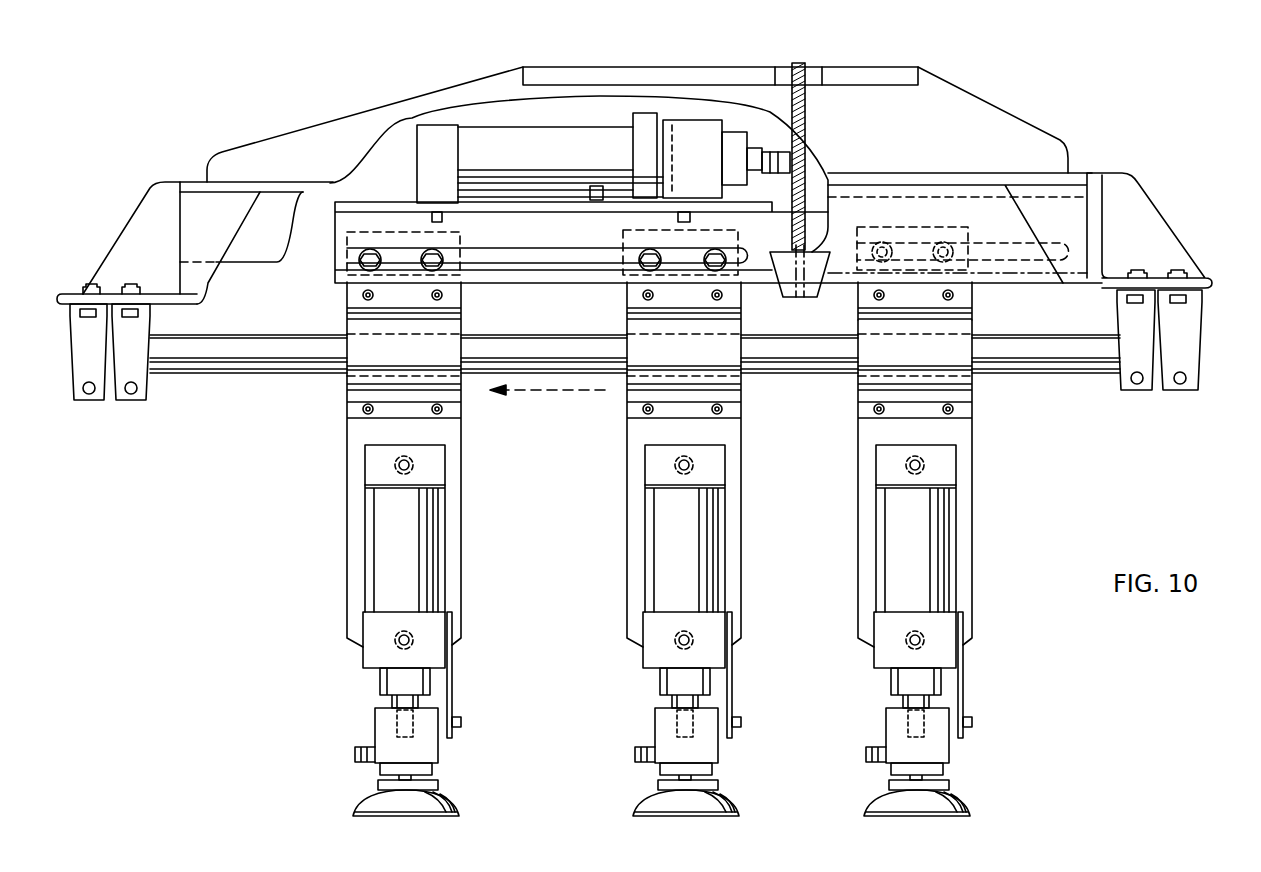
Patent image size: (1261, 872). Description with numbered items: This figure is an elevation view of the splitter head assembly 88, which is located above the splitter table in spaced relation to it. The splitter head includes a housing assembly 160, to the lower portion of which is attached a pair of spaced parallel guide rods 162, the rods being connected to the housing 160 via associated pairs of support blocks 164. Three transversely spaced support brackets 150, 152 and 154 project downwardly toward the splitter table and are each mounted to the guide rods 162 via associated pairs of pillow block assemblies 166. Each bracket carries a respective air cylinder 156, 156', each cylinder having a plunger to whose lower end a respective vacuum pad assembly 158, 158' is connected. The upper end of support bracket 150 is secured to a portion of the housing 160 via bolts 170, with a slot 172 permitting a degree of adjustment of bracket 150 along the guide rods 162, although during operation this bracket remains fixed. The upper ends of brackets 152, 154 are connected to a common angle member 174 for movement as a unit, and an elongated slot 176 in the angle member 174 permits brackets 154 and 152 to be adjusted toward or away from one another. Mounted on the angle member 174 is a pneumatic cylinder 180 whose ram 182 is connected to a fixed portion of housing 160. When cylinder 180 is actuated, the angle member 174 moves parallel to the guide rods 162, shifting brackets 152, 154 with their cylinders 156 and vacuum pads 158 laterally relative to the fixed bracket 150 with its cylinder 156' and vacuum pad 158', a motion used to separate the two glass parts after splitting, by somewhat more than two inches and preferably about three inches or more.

The splitter head assembly 88 is at (1028, 120).
The support bracket 150 is at (963, 385).
The support bracket 152 is at (738, 385).
The support bracket 154 is at (347, 388).
The air cylinder 156 is at (588, 591).
The air cylinder 156' is at (970, 591).
The vacuum pad assembly 158 is at (587, 742).
The vacuum pad assembly 158' is at (967, 742).
The housing assembly 160 is at (1095, 237).
The guide rods 162 is at (208, 355).
The support blocks 164 is at (82, 398).
The pillow block assemblies 166 is at (960, 320).
The bolts 170 is at (942, 245).
The slot 172 is at (1035, 243).
The angle member 174 is at (543, 272).
The elongated slot 176 is at (530, 258).
The pneumatic cylinder 180 is at (485, 147).
The ram 182 is at (777, 150).